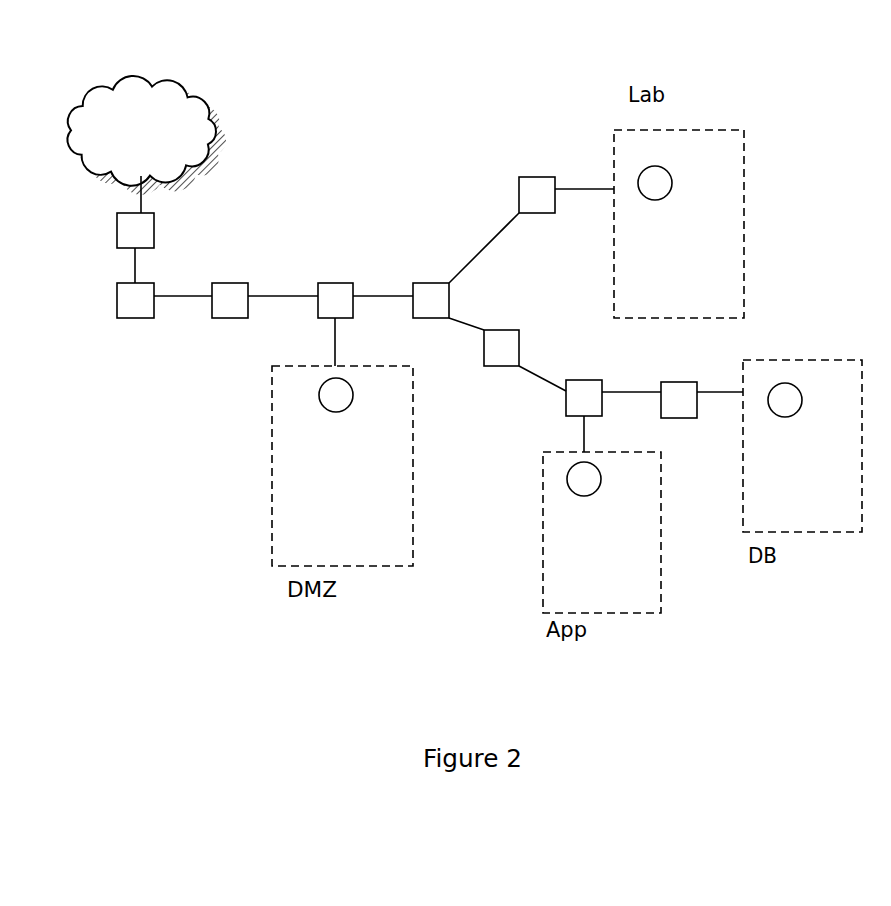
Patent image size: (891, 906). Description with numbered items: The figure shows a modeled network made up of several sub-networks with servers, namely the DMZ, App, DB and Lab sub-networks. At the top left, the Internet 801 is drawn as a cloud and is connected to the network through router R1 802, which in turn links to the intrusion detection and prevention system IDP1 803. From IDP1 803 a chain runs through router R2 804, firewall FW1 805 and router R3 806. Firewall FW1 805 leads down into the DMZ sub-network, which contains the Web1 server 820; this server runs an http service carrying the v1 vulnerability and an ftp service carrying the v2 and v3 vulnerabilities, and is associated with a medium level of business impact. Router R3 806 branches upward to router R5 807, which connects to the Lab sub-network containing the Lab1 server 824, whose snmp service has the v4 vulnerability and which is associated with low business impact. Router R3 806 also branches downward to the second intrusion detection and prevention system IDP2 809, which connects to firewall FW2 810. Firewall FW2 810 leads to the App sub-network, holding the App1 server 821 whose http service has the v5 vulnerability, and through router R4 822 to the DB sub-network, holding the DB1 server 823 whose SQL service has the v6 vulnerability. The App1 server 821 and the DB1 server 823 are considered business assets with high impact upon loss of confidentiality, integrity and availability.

The Internet 801 is at (147, 123).
The router R1 802 is at (96, 230).
The intrusion detection and prevention system IDP1 803 is at (143, 333).
The router R2 804 is at (216, 283).
The firewall FW1 805 is at (325, 265).
The router R3 806 is at (426, 259).
The router R5 807 is at (557, 173).
The intrusion detection and prevention system IDP2 809 is at (500, 319).
The firewall FW2 810 is at (582, 373).
The Web1 server 820 is at (346, 459).
The App1 server 821 is at (601, 532).
The router R4 822 is at (687, 440).
The DB1 server 823 is at (809, 452).
The Lab1 server 824 is at (676, 237).